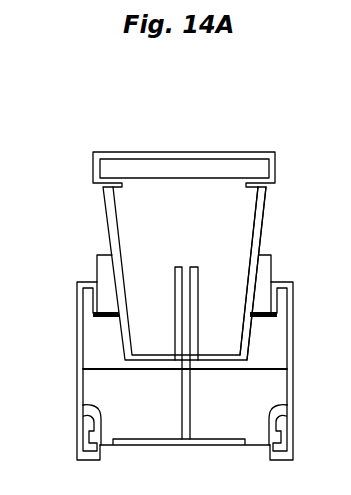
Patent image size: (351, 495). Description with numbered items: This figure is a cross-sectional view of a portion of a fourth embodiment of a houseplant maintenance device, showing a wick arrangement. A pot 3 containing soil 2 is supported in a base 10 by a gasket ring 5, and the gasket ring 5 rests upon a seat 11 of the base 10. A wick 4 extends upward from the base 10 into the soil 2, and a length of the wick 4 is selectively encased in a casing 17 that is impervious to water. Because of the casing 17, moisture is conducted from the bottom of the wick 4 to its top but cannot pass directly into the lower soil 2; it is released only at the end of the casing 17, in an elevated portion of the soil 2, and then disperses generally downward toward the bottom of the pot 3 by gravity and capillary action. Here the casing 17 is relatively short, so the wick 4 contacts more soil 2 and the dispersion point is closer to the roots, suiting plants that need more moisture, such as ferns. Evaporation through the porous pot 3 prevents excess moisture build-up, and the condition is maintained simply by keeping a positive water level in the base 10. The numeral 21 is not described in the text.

The soil 2 is at (155, 198).
The pot 3 is at (267, 205).
The wick 4 is at (192, 394).
The gasket ring 5 is at (107, 273).
The base 10 is at (77, 338).
The seat 11 is at (107, 318).
The casing 17 is at (192, 278).
The bottom plate 21 is at (83, 370).